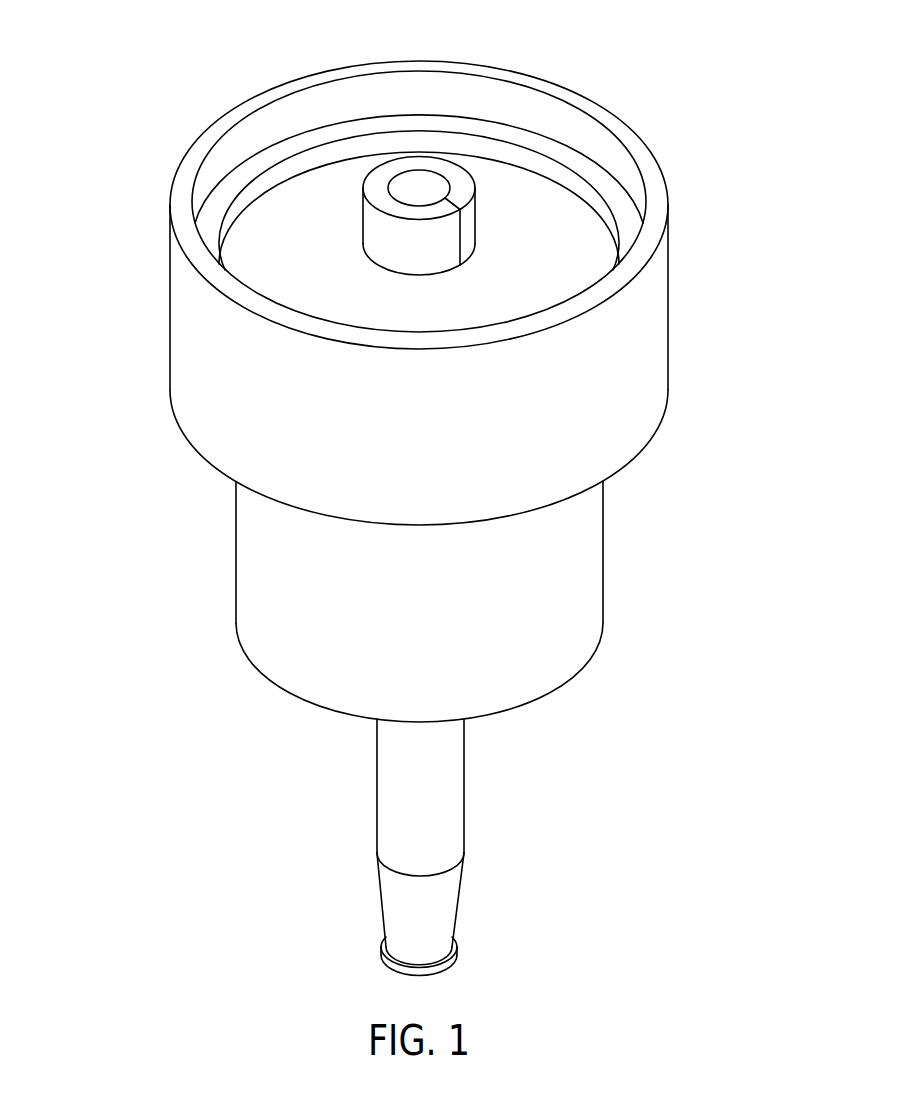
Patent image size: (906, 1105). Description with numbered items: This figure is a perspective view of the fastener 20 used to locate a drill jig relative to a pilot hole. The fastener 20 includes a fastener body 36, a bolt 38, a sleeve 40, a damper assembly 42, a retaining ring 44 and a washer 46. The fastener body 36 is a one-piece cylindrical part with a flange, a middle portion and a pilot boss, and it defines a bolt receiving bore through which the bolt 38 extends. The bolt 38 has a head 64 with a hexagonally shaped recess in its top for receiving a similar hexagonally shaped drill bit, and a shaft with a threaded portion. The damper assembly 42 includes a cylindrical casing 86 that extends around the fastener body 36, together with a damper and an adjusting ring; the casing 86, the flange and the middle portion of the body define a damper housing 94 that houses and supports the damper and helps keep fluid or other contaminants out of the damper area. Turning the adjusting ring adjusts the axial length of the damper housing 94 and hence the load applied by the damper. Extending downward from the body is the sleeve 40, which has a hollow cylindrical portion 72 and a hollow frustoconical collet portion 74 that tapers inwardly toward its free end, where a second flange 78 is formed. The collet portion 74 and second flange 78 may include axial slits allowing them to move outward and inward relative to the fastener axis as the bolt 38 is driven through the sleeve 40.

The fastener 20 is at (128, 100).
The damper assembly 42 is at (670, 263).
The retaining ring 44 is at (548, 148).
The washer 46 is at (573, 225).
The bolt 38 is at (362, 208).
The head 64 is at (461, 252).
The casing 86 is at (171, 337).
The damper housing 94 is at (643, 447).
The fastener body 36 is at (604, 558).
The sleeve 40 is at (376, 750).
The hollow cylindrical portion 72 is at (464, 793).
The hollow frustoconical collet portion 74 is at (460, 907).
The second flange 78 is at (458, 953).